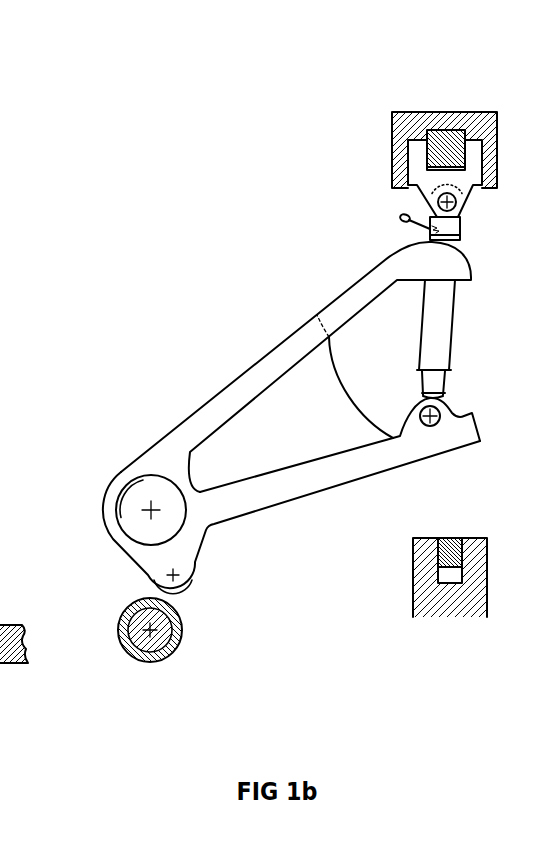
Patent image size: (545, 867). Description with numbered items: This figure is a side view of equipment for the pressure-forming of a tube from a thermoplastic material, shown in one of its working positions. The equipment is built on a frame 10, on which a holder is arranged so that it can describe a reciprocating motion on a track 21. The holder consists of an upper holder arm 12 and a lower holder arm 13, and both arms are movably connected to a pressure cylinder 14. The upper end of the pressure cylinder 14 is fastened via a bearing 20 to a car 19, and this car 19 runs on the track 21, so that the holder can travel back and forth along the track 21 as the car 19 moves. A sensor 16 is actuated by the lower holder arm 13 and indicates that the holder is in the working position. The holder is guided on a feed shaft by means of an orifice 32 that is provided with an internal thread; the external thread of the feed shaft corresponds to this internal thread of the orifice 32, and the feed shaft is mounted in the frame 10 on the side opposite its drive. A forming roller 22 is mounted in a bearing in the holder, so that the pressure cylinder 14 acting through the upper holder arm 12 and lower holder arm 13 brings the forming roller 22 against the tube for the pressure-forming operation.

The frame 10 is at (455, 607).
The upper holder arm 12 is at (243, 383).
The lower holder arm 13 is at (305, 480).
The pressure cylinder 14 is at (438, 340).
The sensor 16 is at (458, 539).
The car 19 is at (433, 187).
The bearing 20 is at (433, 210).
The track 21 is at (412, 158).
The forming roller 22 is at (190, 585).
The orifice with internal thread 32 is at (122, 493).